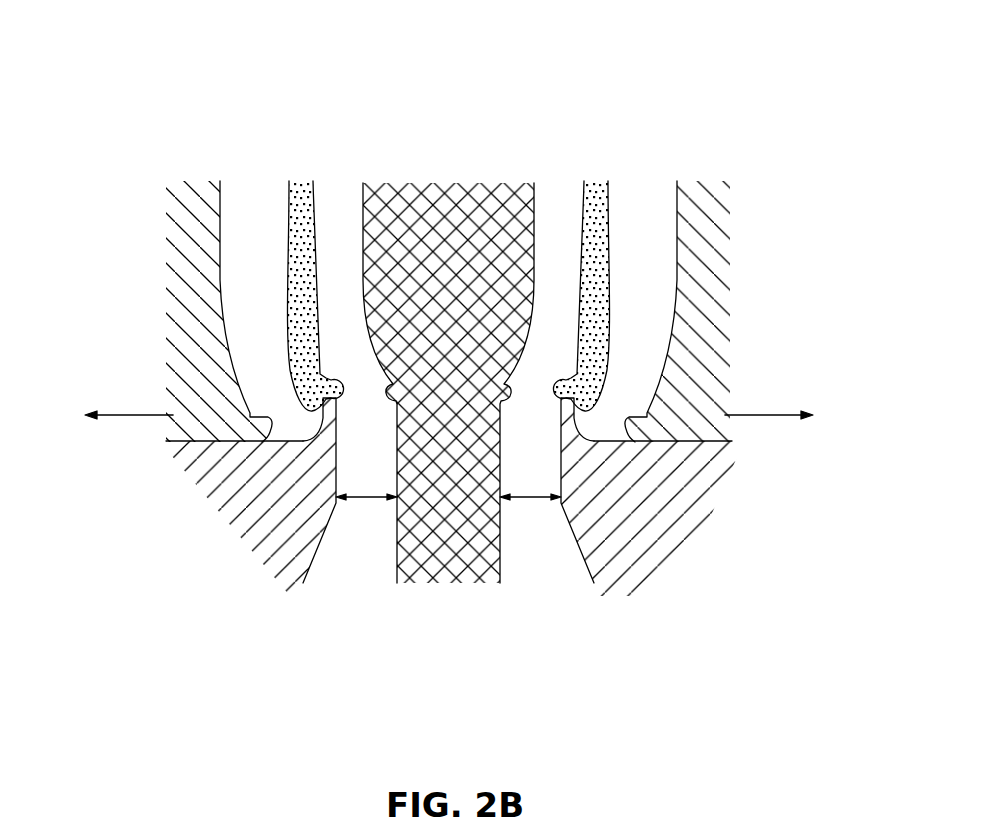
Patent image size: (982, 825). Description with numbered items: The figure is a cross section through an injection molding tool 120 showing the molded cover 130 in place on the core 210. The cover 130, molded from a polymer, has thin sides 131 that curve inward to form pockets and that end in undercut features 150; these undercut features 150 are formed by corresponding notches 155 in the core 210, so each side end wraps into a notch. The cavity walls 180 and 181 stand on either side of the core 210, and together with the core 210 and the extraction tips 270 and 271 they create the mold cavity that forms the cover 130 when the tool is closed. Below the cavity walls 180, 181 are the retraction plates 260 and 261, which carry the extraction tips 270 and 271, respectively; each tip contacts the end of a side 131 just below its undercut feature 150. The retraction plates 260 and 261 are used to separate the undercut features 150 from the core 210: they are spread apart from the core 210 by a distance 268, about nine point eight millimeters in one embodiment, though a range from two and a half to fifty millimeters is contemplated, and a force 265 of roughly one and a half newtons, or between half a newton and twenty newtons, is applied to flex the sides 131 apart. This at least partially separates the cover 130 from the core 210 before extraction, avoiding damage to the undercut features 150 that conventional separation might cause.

The injection molding tool 120 is at (270, 106).
The sides 131 is at (573, 240).
The cavity wall 180 is at (206, 253).
The cavity wall 181 is at (676, 196).
The cover 130 is at (610, 188).
The core 210 is at (500, 198).
The undercut features 150 is at (558, 372).
The notches 155 is at (512, 398).
The force 265 is at (792, 365).
The retraction plate 260 is at (243, 492).
The retraction plate 261 is at (645, 492).
The distance 268 is at (363, 497).
The extraction tip 270 is at (323, 418).
The extraction tip 271 is at (574, 418).